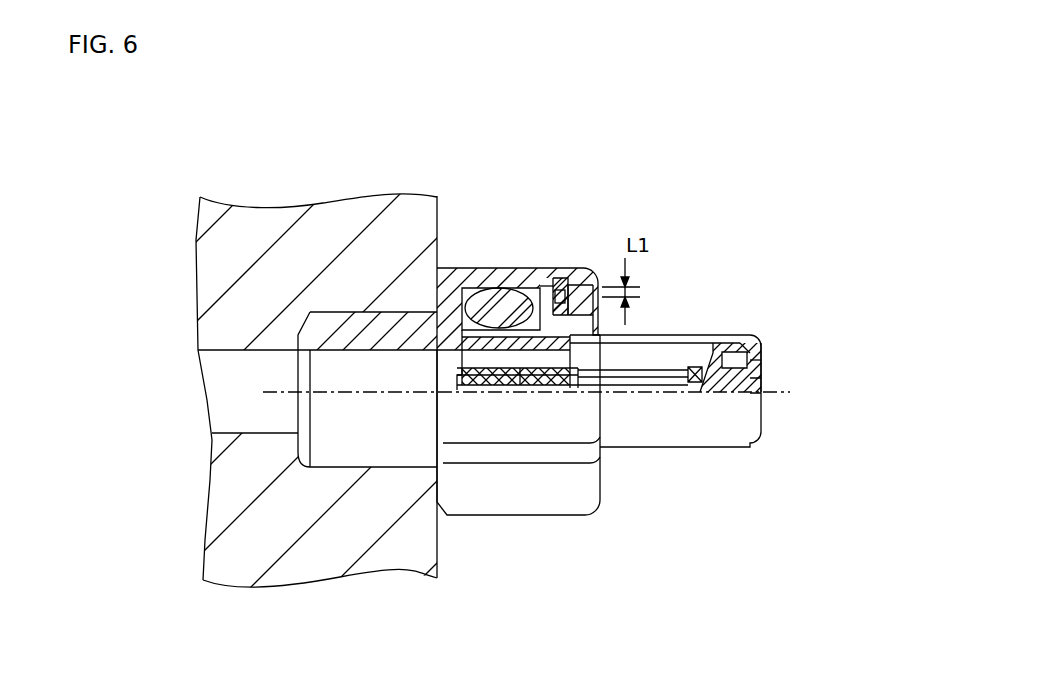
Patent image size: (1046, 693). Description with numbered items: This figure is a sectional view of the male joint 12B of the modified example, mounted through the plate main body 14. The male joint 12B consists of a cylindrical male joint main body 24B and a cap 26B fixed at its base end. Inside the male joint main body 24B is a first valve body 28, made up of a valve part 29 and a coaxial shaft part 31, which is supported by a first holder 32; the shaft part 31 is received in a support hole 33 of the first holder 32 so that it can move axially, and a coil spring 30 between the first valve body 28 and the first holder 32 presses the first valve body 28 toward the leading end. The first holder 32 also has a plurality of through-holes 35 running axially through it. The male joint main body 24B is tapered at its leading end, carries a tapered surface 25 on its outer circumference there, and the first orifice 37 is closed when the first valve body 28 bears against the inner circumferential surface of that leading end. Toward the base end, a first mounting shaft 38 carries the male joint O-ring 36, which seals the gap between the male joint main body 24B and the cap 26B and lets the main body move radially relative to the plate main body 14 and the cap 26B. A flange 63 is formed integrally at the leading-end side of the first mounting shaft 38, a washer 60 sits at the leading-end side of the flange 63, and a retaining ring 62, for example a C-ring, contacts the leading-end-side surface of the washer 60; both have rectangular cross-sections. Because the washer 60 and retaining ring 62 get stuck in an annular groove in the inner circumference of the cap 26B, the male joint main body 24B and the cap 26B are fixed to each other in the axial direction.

The male joint 12B is at (737, 197).
The plate main body 14 is at (288, 582).
The male joint main body 24B is at (705, 333).
The tapered surface 25 is at (752, 338).
The cap 26B is at (300, 338).
The first valve body 28 is at (763, 360).
The valve part 29 is at (710, 395).
The coil spring 30 is at (665, 340).
The shaft part 31 is at (647, 400).
The first holder 32 is at (504, 395).
The support hole 33 is at (548, 390).
The through-holes 35 is at (473, 390).
The male joint O-ring 36 is at (498, 290).
The first orifice 37 is at (766, 379).
The first mounting shaft 38 is at (525, 330).
The washer 60 is at (558, 278).
The retaining ring 62 is at (573, 285).
The flange 63 is at (556, 288).